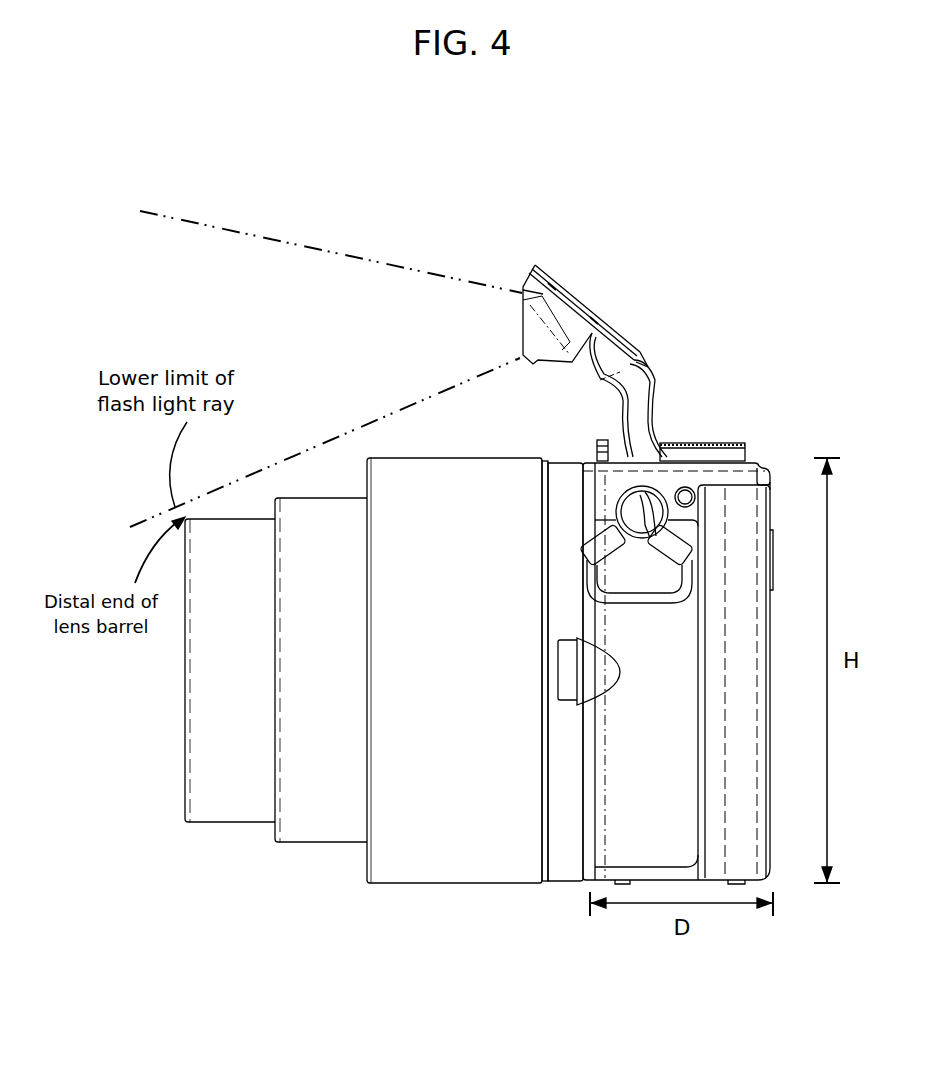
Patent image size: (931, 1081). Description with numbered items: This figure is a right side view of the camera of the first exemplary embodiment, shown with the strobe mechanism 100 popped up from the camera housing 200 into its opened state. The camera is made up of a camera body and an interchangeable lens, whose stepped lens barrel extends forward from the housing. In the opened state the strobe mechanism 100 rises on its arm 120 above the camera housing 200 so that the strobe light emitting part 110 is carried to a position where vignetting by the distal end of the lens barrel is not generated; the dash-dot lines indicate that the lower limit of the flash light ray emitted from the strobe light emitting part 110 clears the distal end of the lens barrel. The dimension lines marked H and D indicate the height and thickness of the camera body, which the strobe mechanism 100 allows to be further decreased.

The strobe mechanism 100 is at (650, 300).
The strobe light emitting part 110 is at (557, 340).
The arm of flash device 120 is at (642, 388).
The camera housing 200 is at (742, 476).